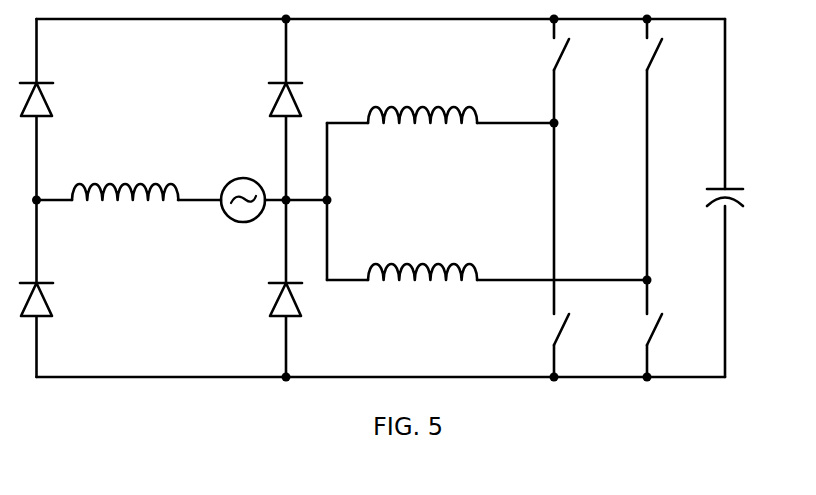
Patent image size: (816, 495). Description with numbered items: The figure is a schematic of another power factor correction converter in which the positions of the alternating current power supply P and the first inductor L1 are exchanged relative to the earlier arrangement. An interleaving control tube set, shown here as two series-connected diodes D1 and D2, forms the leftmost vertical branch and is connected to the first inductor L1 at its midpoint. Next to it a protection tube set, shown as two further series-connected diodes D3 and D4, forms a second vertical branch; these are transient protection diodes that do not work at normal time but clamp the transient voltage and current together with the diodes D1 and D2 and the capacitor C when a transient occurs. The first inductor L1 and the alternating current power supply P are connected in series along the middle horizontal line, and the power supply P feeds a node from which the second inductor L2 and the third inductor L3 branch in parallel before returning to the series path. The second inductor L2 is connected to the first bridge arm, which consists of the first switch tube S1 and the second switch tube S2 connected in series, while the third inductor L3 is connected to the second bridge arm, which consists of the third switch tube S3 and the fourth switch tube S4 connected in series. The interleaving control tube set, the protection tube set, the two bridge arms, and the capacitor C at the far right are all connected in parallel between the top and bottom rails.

The diode D1 is at (59, 89).
The diode D2 is at (63, 299).
The diode D3 is at (301, 89).
The diode D4 is at (301, 299).
The first inductor L1 is at (125, 174).
The second inductor L2 is at (422, 100).
The third inductor L3 is at (422, 258).
The alternating current power supply P is at (243, 186).
The first switch tube S1 is at (540, 71).
The second switch tube S2 is at (540, 250).
The third switch tube S3 is at (668, 149).
The fourth switch tube S4 is at (668, 328).
The capacitor C is at (739, 198).